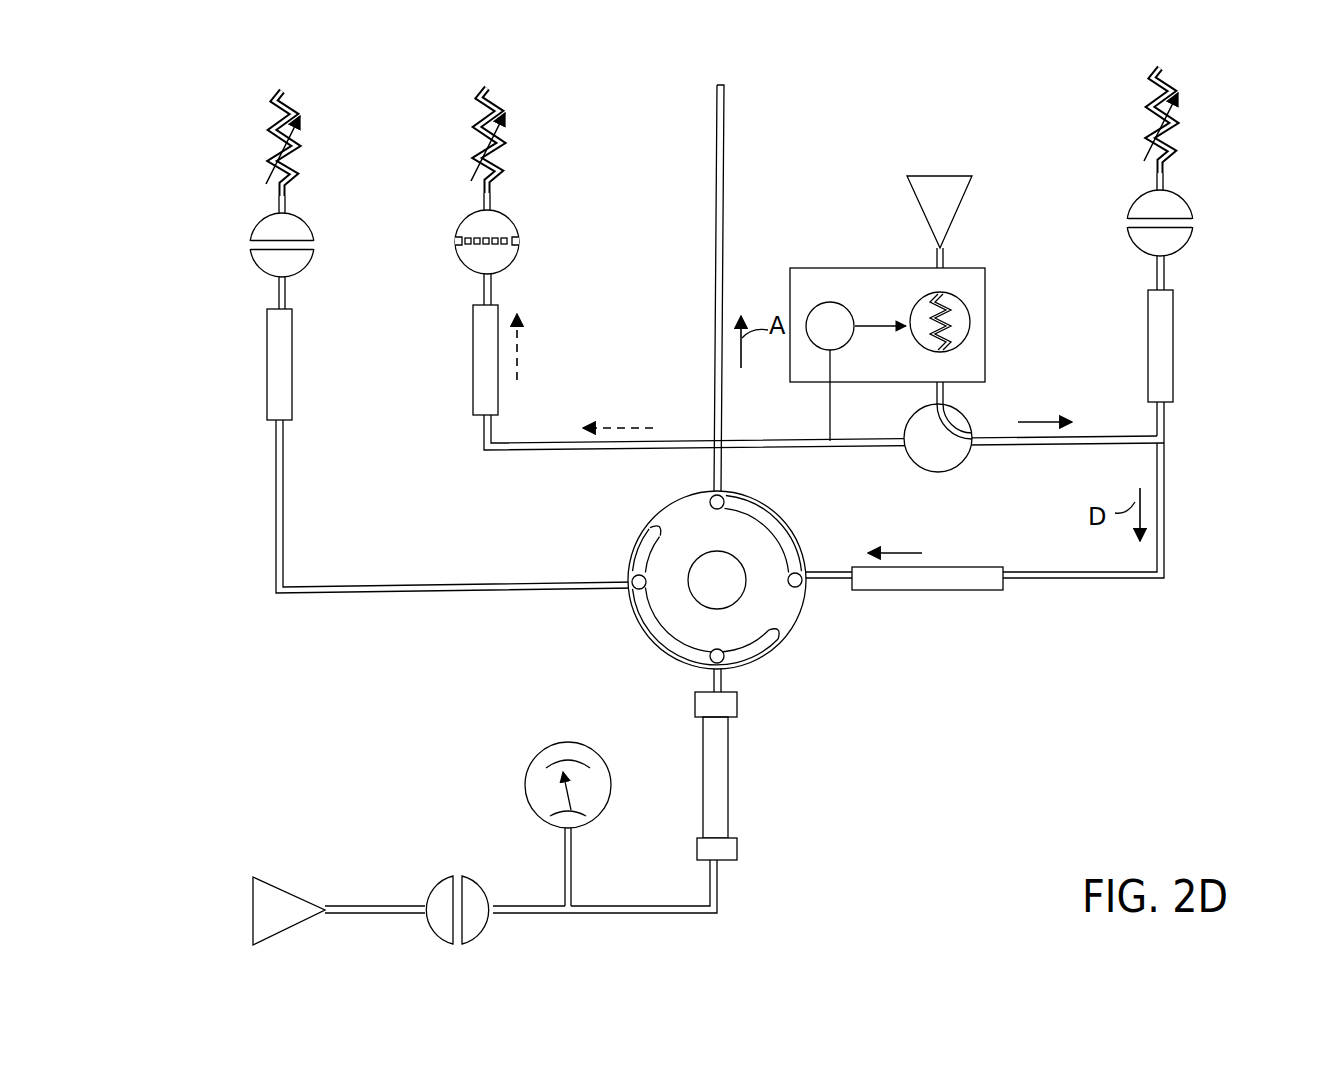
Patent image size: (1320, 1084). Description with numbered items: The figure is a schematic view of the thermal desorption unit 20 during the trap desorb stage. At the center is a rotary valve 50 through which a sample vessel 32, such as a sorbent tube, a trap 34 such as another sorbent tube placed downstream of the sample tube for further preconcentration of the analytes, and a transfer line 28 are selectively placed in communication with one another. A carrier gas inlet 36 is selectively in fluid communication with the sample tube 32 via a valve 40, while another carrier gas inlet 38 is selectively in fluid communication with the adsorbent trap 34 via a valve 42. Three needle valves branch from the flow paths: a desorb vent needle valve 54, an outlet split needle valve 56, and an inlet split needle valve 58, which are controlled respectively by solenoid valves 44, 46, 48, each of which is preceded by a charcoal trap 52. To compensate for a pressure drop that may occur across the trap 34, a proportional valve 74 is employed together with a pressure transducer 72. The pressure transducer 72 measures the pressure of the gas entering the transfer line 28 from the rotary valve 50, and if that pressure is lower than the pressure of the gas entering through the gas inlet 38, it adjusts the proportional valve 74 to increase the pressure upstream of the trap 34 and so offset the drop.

The thermal desorption unit 20 is at (160, 138).
The transfer line 28 is at (725, 170).
The sample vessel 32 is at (726, 788).
The trap 34 is at (967, 567).
The carrier gas inlet 36 is at (287, 890).
The carrier gas inlet 38 is at (958, 212).
The valve 40 is at (432, 890).
The valve 42 is at (962, 412).
The solenoid valve 44 is at (1192, 208).
The solenoid valve 46 is at (523, 232).
The solenoid valve 48 is at (314, 228).
The rotary valve 50 is at (800, 530).
The charcoal trap 52 is at (267, 362).
The desorb vent needle valve 54 is at (1175, 128).
The outlet split needle valve 56 is at (500, 147).
The inlet split needle valve 58 is at (298, 148).
The pressure transducer 72 is at (826, 303).
The proportional valve 74 is at (963, 300).